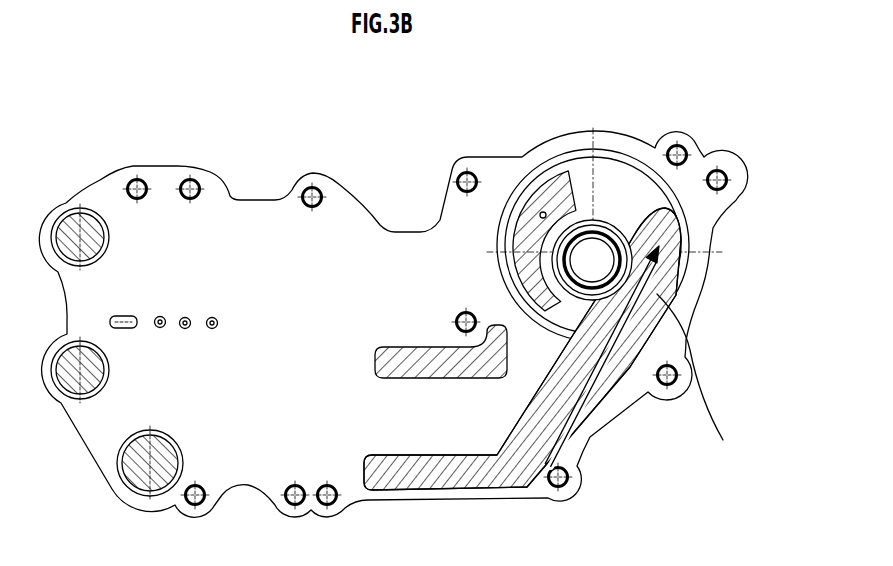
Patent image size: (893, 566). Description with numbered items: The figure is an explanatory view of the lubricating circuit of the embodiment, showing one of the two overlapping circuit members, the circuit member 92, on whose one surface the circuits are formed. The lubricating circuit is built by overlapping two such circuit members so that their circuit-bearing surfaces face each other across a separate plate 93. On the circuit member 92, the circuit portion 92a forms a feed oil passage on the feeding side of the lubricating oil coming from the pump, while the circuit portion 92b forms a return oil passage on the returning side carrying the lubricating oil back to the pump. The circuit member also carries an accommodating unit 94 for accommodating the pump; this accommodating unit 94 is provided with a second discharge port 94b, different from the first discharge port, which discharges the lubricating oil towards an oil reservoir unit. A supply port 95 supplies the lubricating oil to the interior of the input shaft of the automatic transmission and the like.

The circuit member 92 is at (247, 148).
The circuit portion 92a is at (380, 347).
The circuit portion 92b is at (580, 440).
The separate plate 93 is at (252, 256).
The accommodating unit 94 is at (616, 177).
The second discharge port 94b is at (525, 195).
The supply port 95 is at (63, 205).